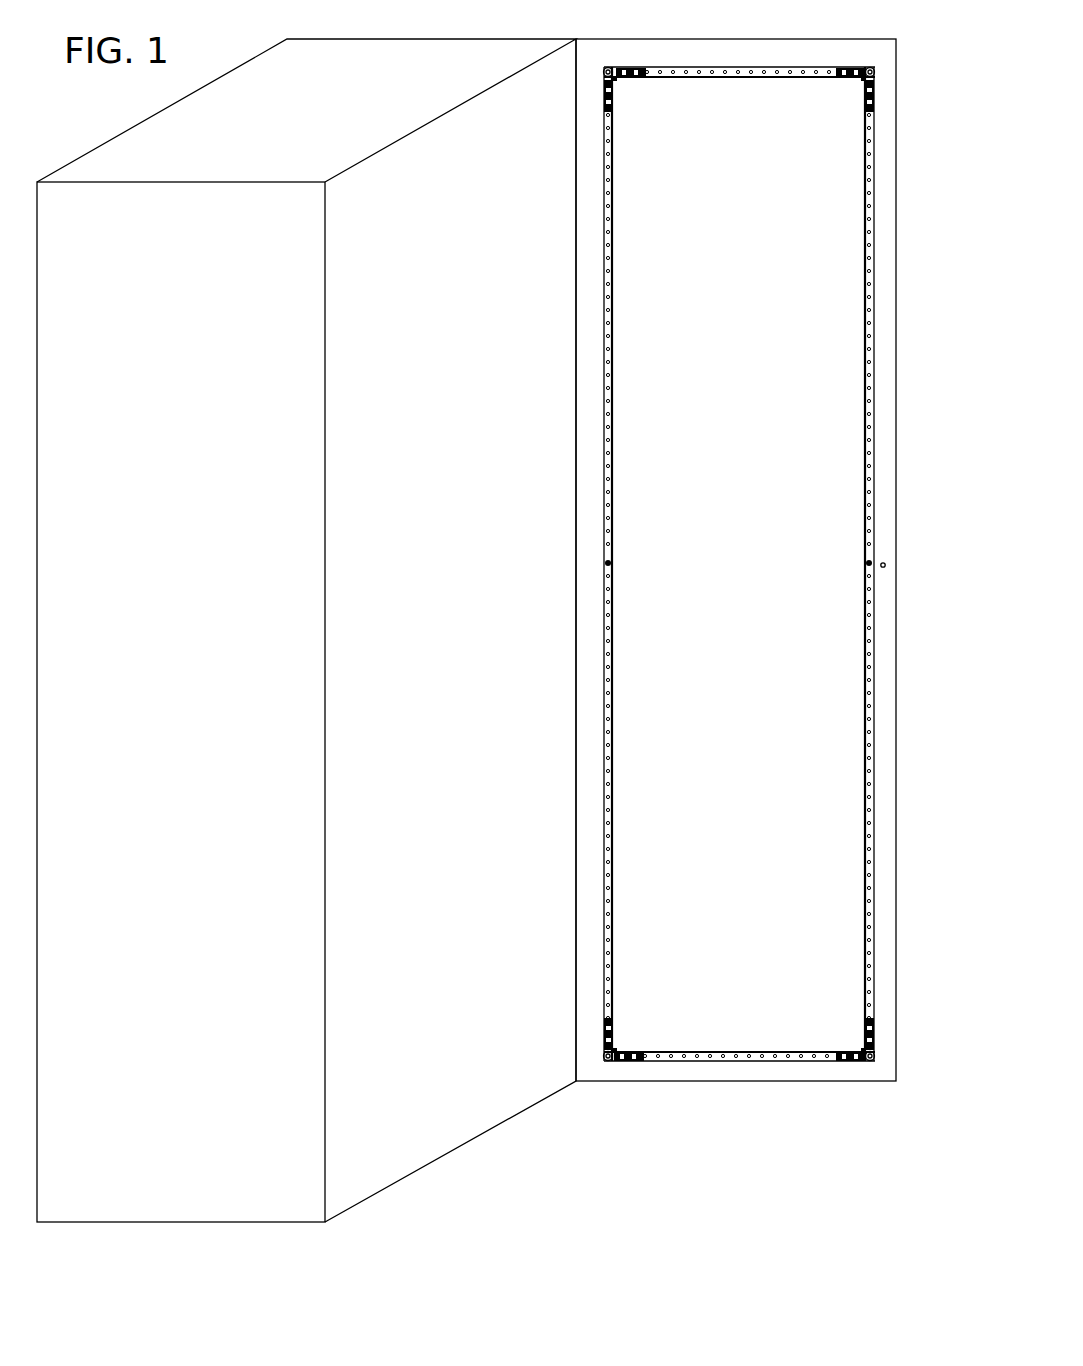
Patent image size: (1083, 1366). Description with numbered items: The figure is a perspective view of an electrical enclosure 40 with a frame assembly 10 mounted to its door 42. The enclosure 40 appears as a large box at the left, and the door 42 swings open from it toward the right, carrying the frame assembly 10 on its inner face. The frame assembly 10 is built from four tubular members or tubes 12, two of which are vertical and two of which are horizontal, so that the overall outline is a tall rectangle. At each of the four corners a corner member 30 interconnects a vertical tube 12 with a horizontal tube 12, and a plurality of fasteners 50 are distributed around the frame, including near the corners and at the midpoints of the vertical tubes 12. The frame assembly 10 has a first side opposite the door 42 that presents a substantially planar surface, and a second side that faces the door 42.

The frame assembly 10 is at (735, 70).
The tubular member 12 is at (611, 210).
The corner member 30 is at (628, 69).
The electrical enclosure 40 is at (135, 152).
The door 42 is at (887, 563).
The fastener 50 is at (615, 80).